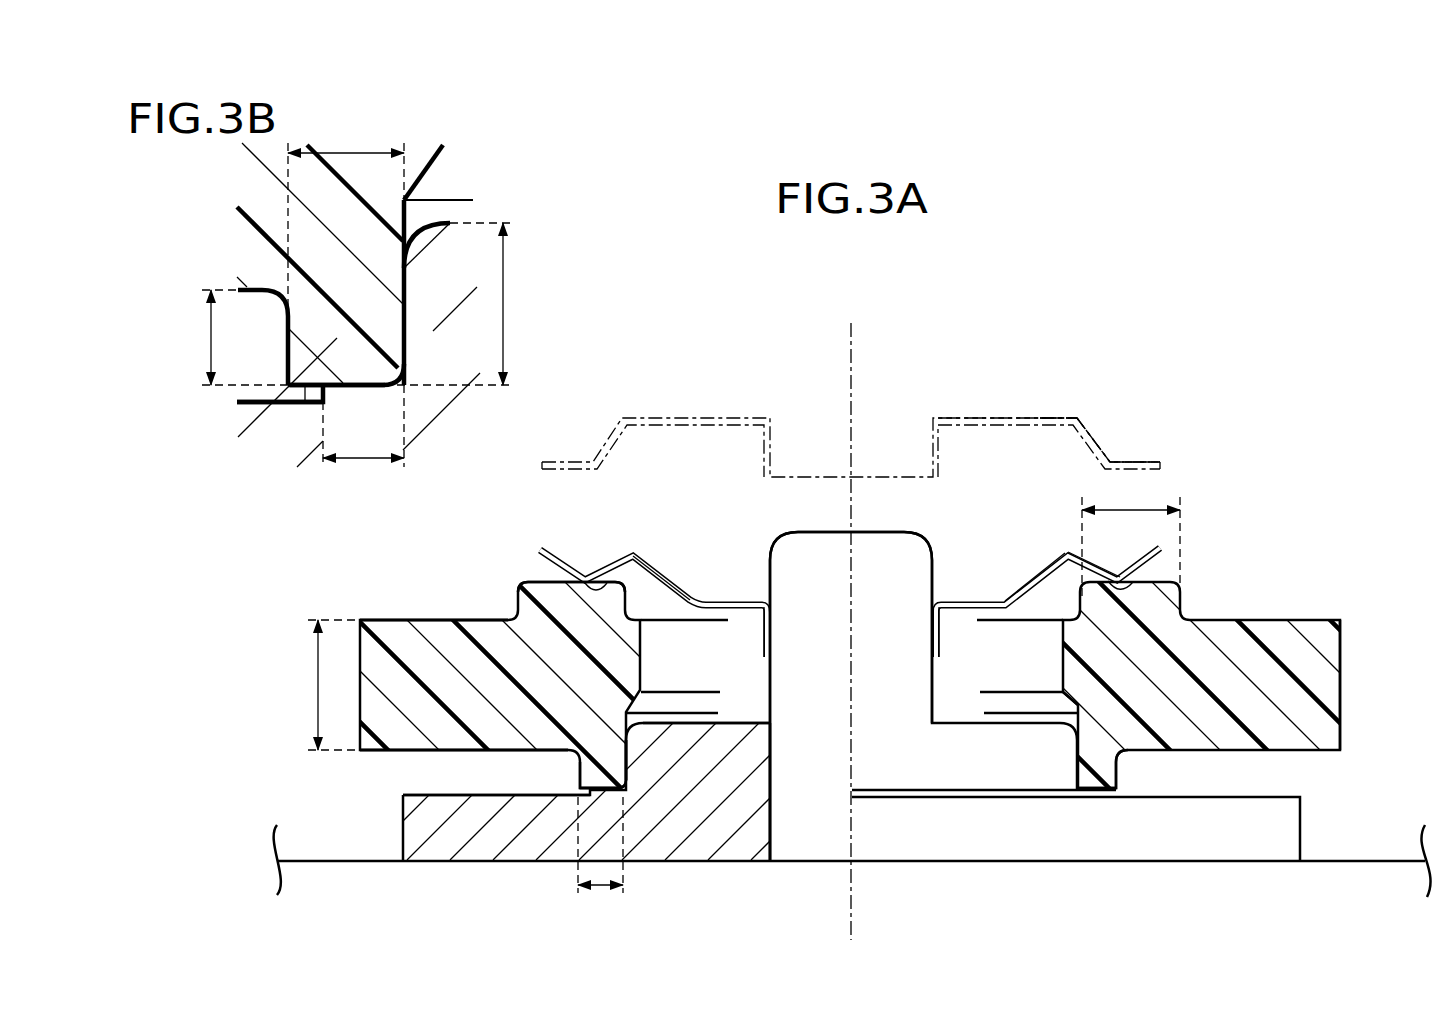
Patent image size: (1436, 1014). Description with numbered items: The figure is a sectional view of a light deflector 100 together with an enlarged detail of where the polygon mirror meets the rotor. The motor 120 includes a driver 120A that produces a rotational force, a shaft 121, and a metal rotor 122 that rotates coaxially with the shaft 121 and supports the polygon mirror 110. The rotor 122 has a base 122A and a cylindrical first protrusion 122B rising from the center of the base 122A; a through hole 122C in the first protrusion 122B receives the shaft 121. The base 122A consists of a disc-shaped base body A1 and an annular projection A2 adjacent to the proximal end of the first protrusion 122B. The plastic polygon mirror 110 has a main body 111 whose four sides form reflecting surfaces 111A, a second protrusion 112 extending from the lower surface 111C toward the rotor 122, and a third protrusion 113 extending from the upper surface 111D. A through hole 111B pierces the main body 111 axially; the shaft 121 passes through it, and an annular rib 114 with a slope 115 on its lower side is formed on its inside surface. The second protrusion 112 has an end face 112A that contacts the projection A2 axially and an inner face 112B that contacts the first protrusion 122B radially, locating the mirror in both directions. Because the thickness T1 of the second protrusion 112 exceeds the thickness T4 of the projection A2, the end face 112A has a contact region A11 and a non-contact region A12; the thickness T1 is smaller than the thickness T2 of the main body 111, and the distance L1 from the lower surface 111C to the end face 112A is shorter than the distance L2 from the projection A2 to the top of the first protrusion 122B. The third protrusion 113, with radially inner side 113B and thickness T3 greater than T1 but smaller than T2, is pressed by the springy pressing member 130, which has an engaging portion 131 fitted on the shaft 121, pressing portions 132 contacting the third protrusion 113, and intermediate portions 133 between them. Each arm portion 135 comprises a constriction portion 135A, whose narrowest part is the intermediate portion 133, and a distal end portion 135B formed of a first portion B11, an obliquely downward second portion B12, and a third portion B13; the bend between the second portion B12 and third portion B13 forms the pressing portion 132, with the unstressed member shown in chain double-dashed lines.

In FIG. 3A, the spindle motor / rotating device 100 is at (1245, 370).
In FIG. 3A, the polygon mirror 110 is at (370, 604).
In FIG. 3A, the main body 111 is at (433, 633).
In FIG. 3A, the reflecting surfaces 111A is at (1341, 662).
In FIG. 3A, the through hole 111B is at (1077, 725).
In FIG. 3B, the lower surface 111C is at (245, 291).
In FIG. 3A, the lower surface 111C is at (427, 752).
In FIG. 3A, the upper surface 111D is at (472, 620).
In FIG. 3A, the second protrusion 112 is at (588, 773).
In FIG. 3B, the end face 112A is at (312, 500).
In FIG. 3A, the end face 112A is at (586, 790).
In FIG. 3A, the inner face 112B is at (627, 760).
In FIG. 3A, the third protrusion 113 is at (545, 590).
In FIG. 3A, the radially inner side 113B is at (625, 598).
In FIG. 3A, the annular rib 114 is at (1060, 666).
In FIG. 3A, the slope 115 is at (1068, 703).
In FIG. 3A, the motor 120 is at (1379, 857).
In FIG. 3A, the driver 120A is at (1330, 870).
In FIG. 3A, the shaft 121 is at (800, 532).
In FIG. 3A, the rotor 122 is at (398, 815).
In FIG. 3B, the base 122A is at (380, 247).
In FIG. 3A, the base 122A is at (443, 850).
In FIG. 3B, the first protrusion 122B is at (462, 223).
In FIG. 3A, the first protrusion 122B is at (741, 728).
In FIG. 3A, the through hole 122C is at (772, 826).
In FIG. 3A, the pressing member 130 is at (1168, 463).
In FIG. 3A, the engaging portion 131 is at (960, 447).
In FIG. 3A, the pressing portion 132 is at (600, 578).
In FIG. 3A, the intermediate portion 133 is at (1018, 598).
In FIG. 3A, the arm portion 135 is at (965, 413).
In FIG. 3A, the constriction portion 135A is at (998, 418).
In FIG. 3A, the distal end portion 135B is at (1195, 342).
In FIG. 3A, the first portion B11 is at (1048, 418).
In FIG. 3A, the second portion B12 is at (1095, 437).
In FIG. 3A, the third portion B13 is at (1137, 458).
In FIG. 3B, the base body A1 is at (290, 356).
In FIG. 3B, the projection A2 is at (340, 372).
In FIG. 3B, the contact region A11 is at (343, 390).
In FIG. 3B, the non-contact region A12 is at (288, 398).
In FIG. 3B, the thickness of the second protrusion T1 is at (346, 138).
In FIG. 3A, the thickness of the second protrusion T1 is at (600, 860).
In FIG. 3A, the thickness of the main body T2 is at (323, 685).
In FIG. 3A, the thickness of the third protrusion T3 is at (1131, 538).
In FIG. 3B, the thickness of the projection T4 is at (363, 475).
In FIG. 3B, the distance L1 is at (196, 337).
In FIG. 3B, the distance L2 is at (518, 304).